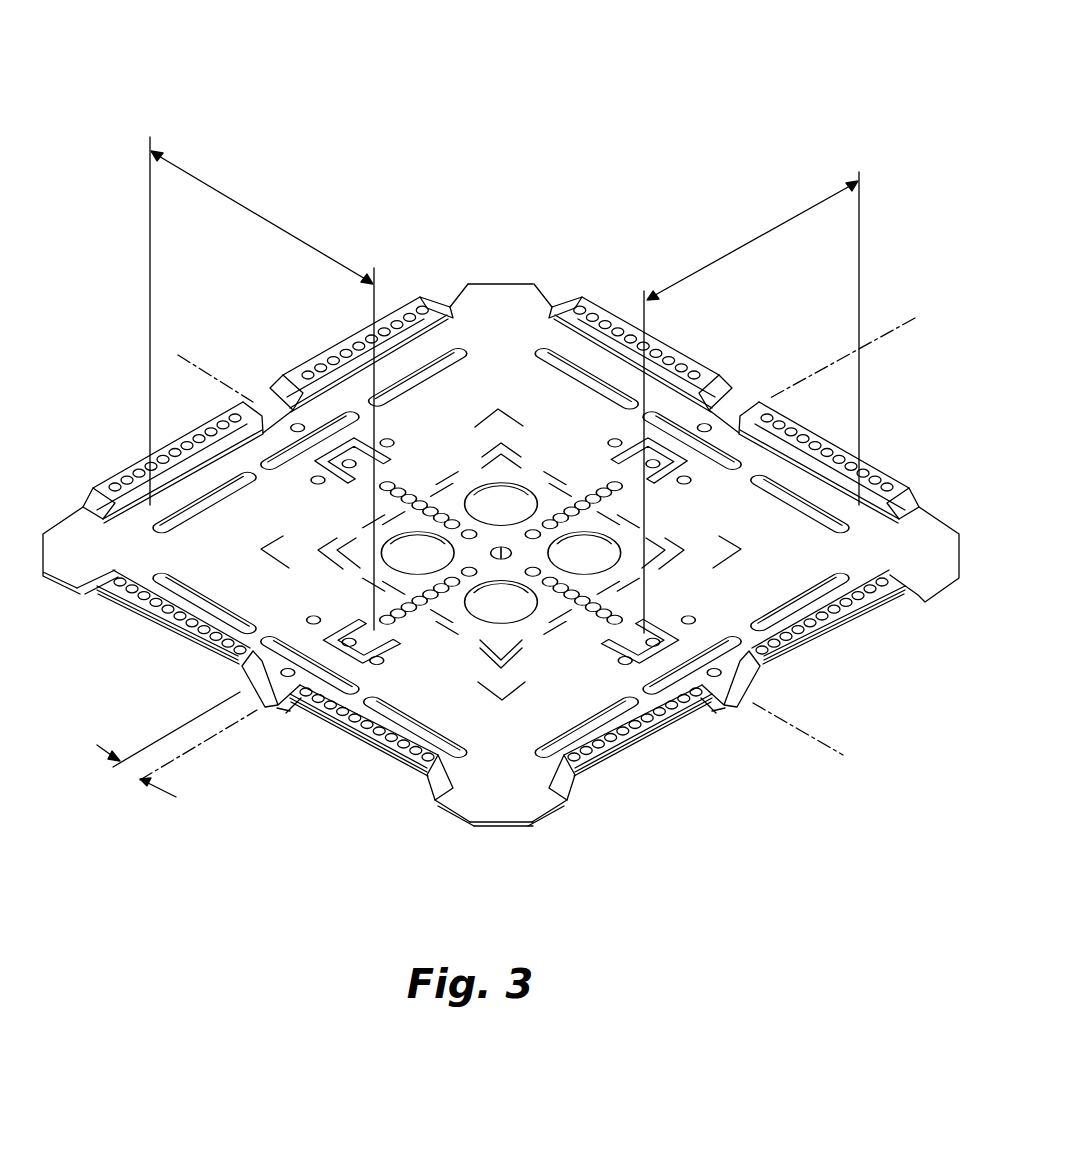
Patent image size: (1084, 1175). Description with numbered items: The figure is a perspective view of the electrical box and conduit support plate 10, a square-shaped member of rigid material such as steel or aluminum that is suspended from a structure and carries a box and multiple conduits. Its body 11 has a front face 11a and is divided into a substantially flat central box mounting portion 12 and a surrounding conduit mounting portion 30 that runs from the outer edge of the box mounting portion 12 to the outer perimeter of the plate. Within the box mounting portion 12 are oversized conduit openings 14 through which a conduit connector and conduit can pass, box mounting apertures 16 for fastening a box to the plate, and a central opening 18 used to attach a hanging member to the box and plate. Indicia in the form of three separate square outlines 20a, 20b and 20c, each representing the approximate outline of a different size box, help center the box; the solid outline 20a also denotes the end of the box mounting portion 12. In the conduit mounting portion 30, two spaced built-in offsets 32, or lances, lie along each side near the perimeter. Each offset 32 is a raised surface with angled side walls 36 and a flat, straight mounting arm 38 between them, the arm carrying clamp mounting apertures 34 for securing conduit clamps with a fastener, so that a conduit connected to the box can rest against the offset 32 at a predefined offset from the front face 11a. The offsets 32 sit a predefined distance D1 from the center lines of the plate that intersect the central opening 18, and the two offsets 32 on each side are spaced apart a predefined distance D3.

The support plate 10 is at (337, 122).
The body 11 is at (502, 272).
The front face 11a is at (523, 310).
The box mounting portion 12 is at (504, 424).
The conduit openings 14 is at (486, 503).
The box mounting apertures 16 is at (418, 503).
The central opening 18 is at (504, 545).
The square outline 20a is at (266, 537).
The square outline 20b is at (318, 548).
The square outline 20c is at (350, 548).
The conduit mounting portion 30 is at (479, 312).
The built-in offsets 32 is at (406, 297).
The clamp mounting apertures 34 is at (118, 478).
The side walls 36 is at (93, 502).
The mounting arm 38 is at (197, 425).
The predefined distance D1 is at (532, 446).
The predefined distance D3 is at (168, 749).